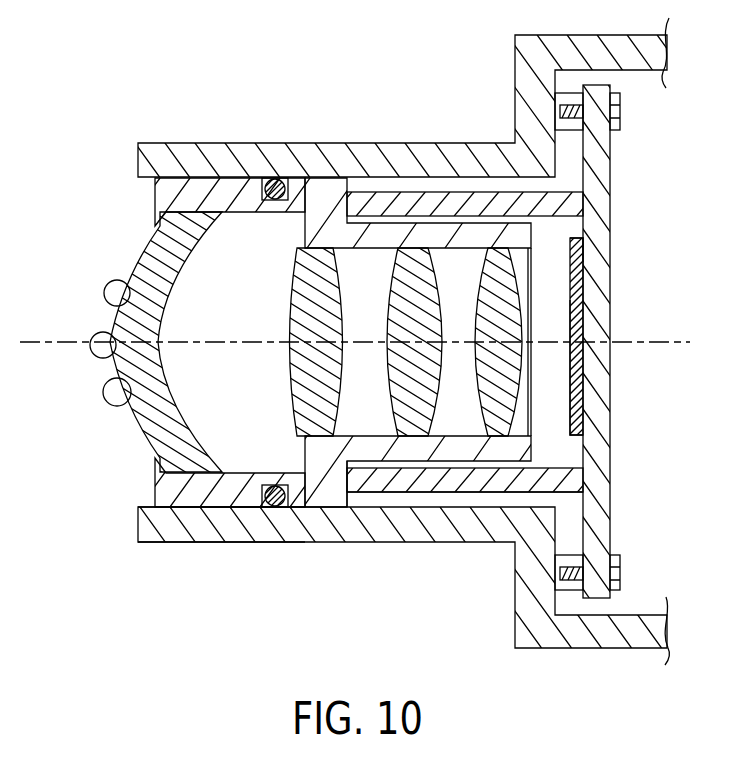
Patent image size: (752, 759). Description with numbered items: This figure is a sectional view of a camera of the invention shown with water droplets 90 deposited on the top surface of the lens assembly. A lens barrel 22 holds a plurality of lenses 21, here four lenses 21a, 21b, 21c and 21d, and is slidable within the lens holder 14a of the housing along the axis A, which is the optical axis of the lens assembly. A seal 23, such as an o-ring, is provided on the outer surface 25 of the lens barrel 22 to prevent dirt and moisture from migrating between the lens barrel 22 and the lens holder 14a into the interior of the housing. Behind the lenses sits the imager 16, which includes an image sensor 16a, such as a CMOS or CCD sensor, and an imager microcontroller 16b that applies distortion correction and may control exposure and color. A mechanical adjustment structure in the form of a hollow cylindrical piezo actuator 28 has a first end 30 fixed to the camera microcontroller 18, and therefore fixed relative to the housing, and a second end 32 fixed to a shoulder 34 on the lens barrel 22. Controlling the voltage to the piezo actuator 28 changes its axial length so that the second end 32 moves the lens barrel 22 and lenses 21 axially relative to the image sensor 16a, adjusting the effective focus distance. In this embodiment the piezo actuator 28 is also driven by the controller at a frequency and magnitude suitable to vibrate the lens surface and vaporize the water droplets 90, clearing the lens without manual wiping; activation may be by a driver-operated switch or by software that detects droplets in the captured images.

The lens holder 14a is at (391, 143).
The piezo actuator 28 is at (476, 497).
The camera microcontroller 18 is at (612, 206).
The imager 16 is at (575, 293).
The image sensor 16a is at (578, 321).
The imager microcontroller 16b is at (575, 256).
The first end 30 is at (585, 483).
The second end 32 is at (307, 473).
The shoulder 34 is at (352, 497).
The lens barrel 22 is at (185, 490).
The outer surface 25 is at (228, 512).
The seal 23 is at (273, 501).
The lenses 21 is at (291, 347).
The first lens 21a is at (138, 411).
The second lens 21b is at (300, 395).
The third lens 21c is at (410, 381).
The fourth lens 21d is at (500, 381).
The water droplets 90 is at (110, 285).
The axis A is at (673, 340).